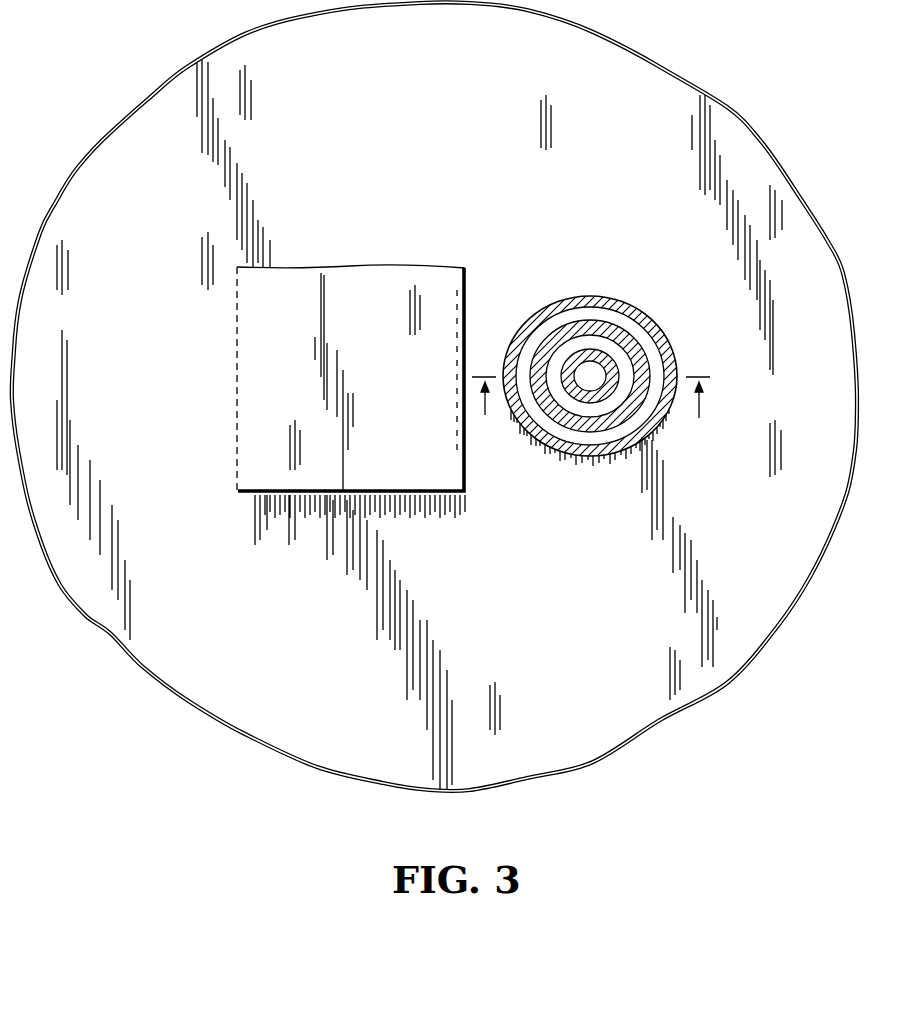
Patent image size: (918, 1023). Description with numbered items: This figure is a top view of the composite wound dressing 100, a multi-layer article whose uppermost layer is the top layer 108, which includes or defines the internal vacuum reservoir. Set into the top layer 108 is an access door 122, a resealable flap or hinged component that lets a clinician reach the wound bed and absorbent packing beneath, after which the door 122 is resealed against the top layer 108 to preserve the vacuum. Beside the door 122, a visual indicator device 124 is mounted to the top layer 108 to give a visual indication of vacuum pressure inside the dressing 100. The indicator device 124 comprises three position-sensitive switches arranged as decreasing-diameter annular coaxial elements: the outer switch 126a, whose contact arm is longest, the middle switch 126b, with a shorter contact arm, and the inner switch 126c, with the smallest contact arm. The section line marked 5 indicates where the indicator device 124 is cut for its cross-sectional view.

The composite wound dressing 100 is at (210, 722).
The top layer 108 is at (446, 171).
The access door 122 is at (404, 389).
The visual indicator device 124 is at (606, 381).
The outer switch 126a is at (612, 387).
The middle switch 126b is at (565, 335).
The inner switch 126c is at (632, 307).
The section line 5- 5 is at (591, 381).